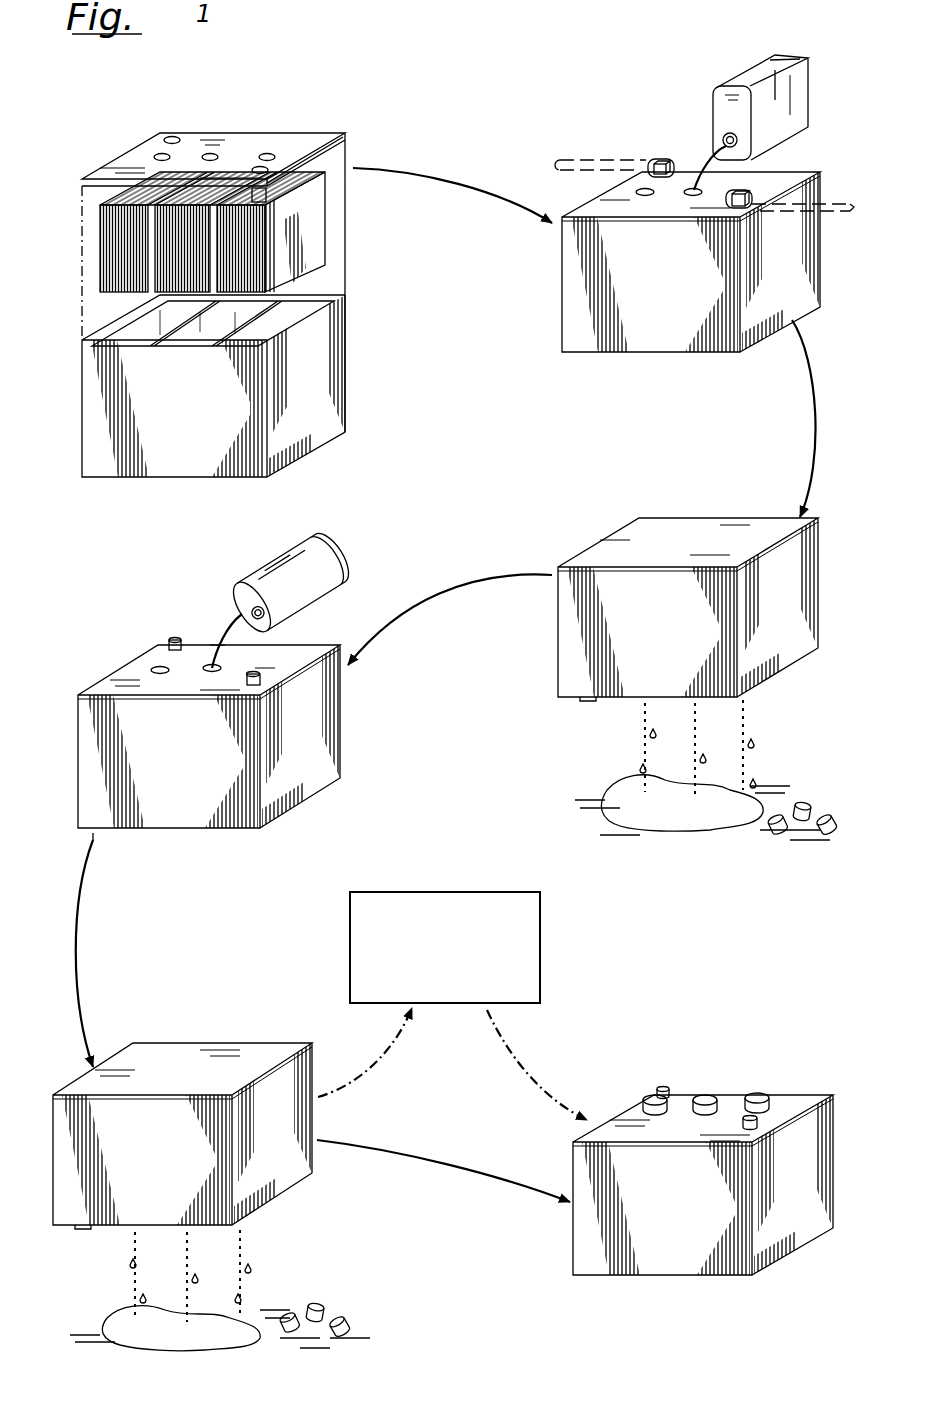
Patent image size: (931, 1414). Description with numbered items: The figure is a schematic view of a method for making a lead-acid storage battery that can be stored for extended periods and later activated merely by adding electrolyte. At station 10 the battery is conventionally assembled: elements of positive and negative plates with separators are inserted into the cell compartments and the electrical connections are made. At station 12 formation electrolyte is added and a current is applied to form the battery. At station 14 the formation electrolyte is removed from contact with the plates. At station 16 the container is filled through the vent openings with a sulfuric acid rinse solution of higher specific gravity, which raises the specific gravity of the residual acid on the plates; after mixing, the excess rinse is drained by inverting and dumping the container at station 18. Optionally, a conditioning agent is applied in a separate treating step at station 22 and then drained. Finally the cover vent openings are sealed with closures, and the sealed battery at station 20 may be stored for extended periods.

The assembly station 10 is at (303, 128).
The formation station 12 is at (677, 150).
The formation electrolyte removal station 14 is at (683, 507).
The rinse station 16 is at (135, 653).
The rinse draining station 18 is at (175, 1040).
The sealed battery station 20 is at (727, 1088).
The conditioning agent treating station 22 is at (445, 887).